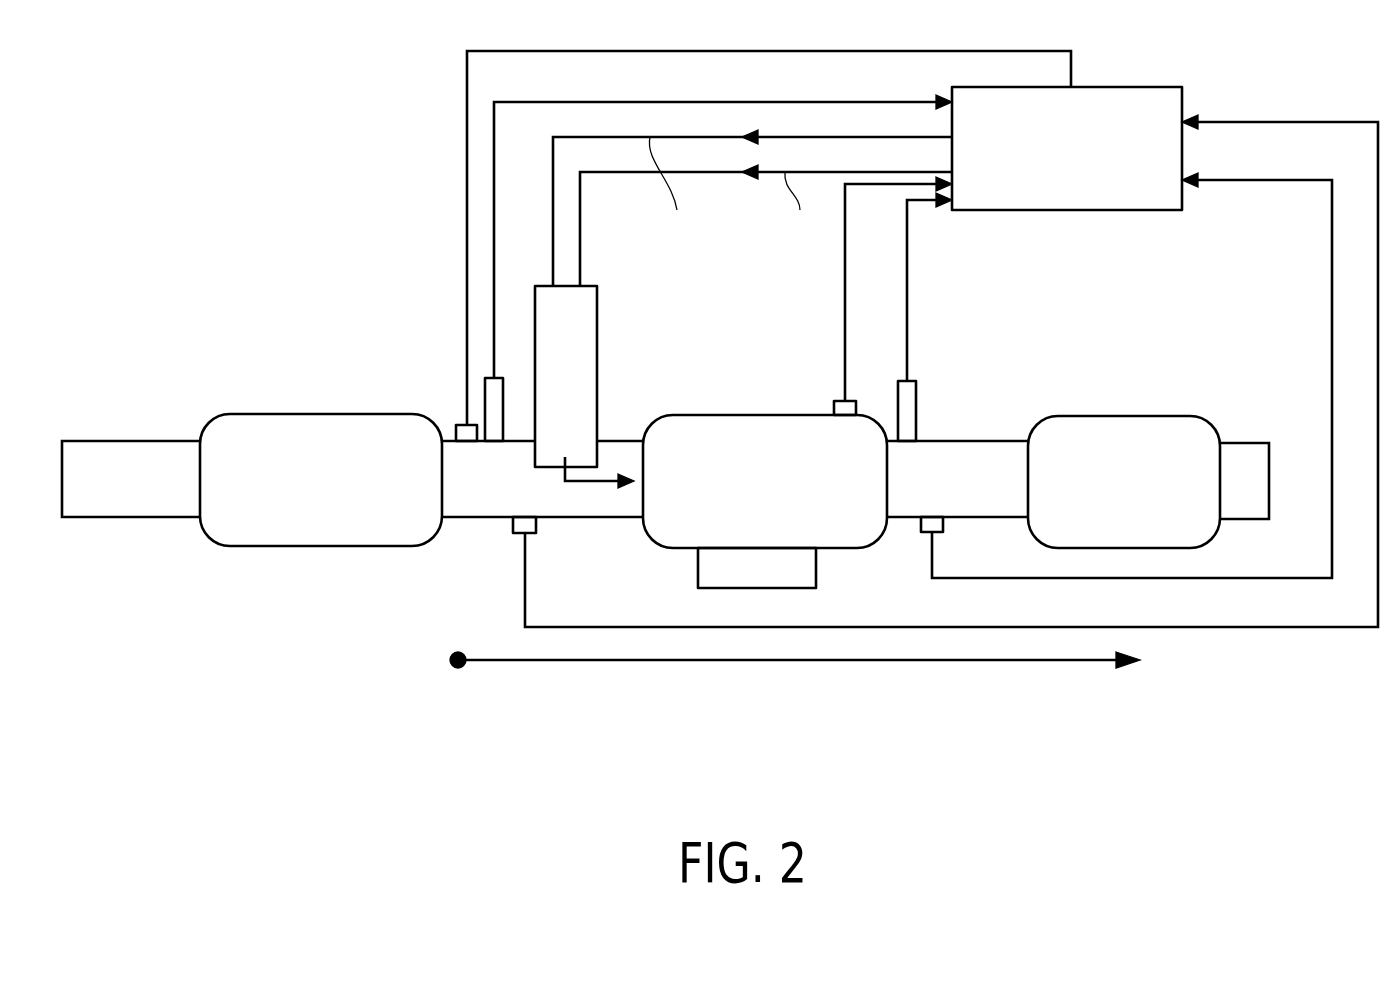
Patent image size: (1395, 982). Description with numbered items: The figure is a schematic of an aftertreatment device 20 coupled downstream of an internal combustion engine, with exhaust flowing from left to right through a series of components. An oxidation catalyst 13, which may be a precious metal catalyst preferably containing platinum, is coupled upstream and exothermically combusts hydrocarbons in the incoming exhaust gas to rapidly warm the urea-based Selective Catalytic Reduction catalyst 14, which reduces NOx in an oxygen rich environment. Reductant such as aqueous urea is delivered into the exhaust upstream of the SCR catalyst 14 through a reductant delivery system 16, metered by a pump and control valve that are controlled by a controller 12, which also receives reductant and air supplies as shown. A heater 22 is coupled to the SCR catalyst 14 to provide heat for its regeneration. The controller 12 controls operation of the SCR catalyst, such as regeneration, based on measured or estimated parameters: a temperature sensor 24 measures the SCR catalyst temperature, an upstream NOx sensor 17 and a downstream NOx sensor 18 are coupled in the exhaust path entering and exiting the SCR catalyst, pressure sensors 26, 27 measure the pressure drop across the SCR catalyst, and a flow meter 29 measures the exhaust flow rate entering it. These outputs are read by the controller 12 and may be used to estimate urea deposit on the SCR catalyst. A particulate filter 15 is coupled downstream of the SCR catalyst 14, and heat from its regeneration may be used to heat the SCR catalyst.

The controller 12 is at (1115, 87).
The oxidation catalyst 13 is at (328, 414).
The urea-based Selective Catalytic Reduction (SCR) catalyst 14 is at (750, 415).
The particulate filter 15 is at (1125, 416).
The reductant delivery system 16 is at (597, 360).
The upstream NOx sensor 17 is at (490, 378).
The downstream NOx sensor 18 is at (910, 381).
The aftertreatment device 20 is at (262, 202).
The heater 22 is at (698, 562).
The temperature sensor 24 is at (848, 401).
The pressure sensor 26 is at (520, 535).
The pressure sensor 27 is at (925, 535).
The flow meter 29 is at (460, 425).